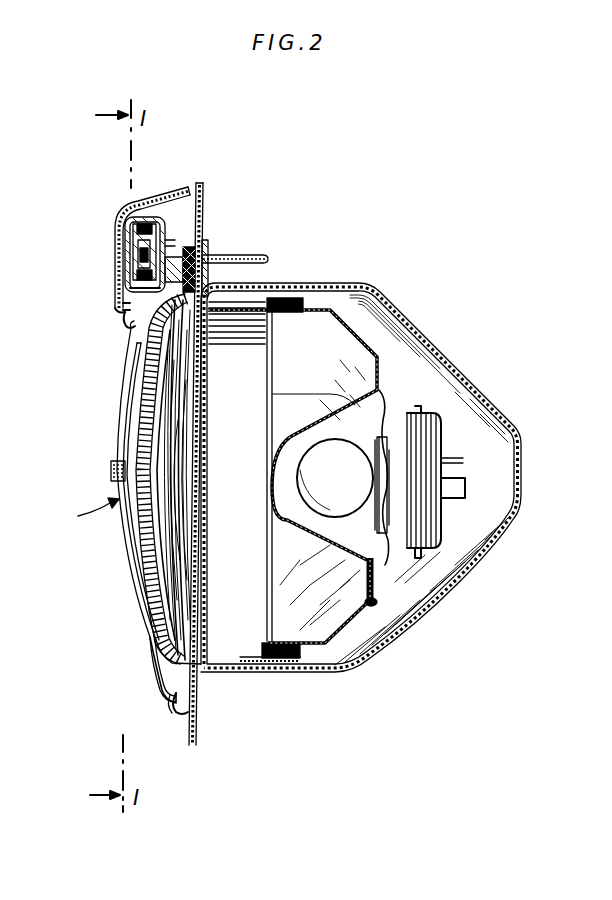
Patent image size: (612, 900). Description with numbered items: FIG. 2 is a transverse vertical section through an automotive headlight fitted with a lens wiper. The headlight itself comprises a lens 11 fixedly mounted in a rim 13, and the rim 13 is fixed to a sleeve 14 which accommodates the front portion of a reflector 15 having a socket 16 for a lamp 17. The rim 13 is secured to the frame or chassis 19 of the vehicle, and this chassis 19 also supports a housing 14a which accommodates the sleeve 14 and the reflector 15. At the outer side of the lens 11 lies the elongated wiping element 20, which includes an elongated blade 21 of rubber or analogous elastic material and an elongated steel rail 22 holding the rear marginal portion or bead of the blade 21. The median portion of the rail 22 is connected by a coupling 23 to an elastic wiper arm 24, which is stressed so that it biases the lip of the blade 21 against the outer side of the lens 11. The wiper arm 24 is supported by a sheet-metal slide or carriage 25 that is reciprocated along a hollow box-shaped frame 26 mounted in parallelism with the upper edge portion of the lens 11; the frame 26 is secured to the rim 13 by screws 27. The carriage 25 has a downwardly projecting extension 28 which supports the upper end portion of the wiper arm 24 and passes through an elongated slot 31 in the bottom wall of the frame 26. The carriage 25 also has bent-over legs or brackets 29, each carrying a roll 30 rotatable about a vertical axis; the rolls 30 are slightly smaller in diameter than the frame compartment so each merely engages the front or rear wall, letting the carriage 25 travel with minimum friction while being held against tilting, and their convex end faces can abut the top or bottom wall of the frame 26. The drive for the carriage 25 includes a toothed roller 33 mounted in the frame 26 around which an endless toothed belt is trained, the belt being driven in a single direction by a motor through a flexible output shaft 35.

The lens 11 is at (140, 637).
The rim 13 is at (173, 704).
The sleeve 14 is at (268, 664).
The housing 14a is at (425, 344).
The reflector 15 is at (328, 310).
The socket 16 is at (468, 548).
The lamp 17 is at (298, 478).
The chassis 19 is at (200, 198).
The wiping element 20 is at (79, 515).
The blade 21 is at (136, 586).
The rail 22 is at (140, 545).
The coupling 23 is at (114, 461).
The wiper arm 24 is at (122, 404).
The carriage 25 is at (133, 253).
The frame 26 is at (126, 232).
The screws 27 is at (172, 260).
The extension 28 is at (122, 322).
The brackets 29 is at (172, 238).
The rolls 30 is at (140, 220).
The slot 31 is at (128, 285).
The toothed roller 33 is at (165, 200).
The flexible output shaft 35 is at (267, 257).